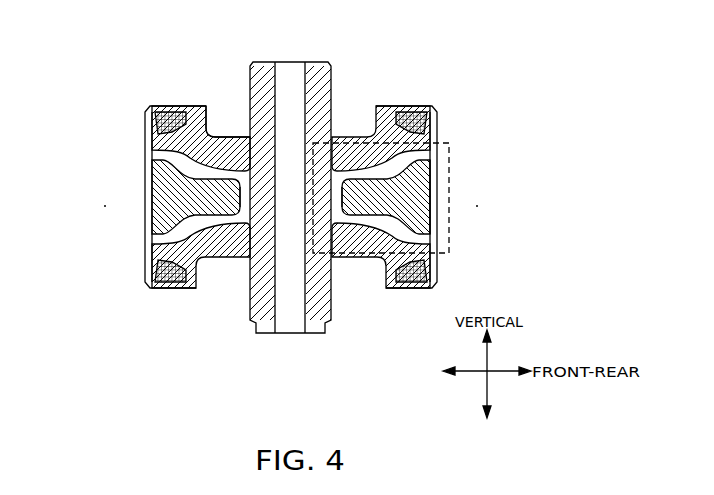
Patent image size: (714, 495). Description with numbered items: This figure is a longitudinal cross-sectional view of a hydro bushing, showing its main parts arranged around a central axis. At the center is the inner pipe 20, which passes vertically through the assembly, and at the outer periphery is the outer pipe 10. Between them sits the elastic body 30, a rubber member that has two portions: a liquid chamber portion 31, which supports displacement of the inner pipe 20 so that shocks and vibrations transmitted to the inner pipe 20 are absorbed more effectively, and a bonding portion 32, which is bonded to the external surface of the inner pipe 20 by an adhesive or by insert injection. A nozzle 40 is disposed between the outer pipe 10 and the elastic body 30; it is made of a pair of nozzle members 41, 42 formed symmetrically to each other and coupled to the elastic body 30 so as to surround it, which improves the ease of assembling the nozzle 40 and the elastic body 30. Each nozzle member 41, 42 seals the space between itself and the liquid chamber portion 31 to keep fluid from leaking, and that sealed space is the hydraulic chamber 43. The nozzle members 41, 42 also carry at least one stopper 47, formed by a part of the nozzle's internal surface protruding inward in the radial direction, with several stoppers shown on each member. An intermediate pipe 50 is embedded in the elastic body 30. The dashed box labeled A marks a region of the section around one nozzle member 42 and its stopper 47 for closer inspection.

The outer pipe 10 is at (437, 117).
The inner pipe 20 is at (316, 74).
The elastic body 30 is at (200, 146).
The liquid chamber portion 31 is at (238, 226).
The bonding portion 32 is at (258, 112).
The nozzle 40 is at (97, 206).
The nozzle member 41 is at (152, 197).
The nozzle member 42 is at (437, 197).
The hydraulic chamber 43 is at (338, 197).
The stopper 47 is at (383, 204).
The intermediate pipe 50 is at (400, 118).
The detail region A is at (452, 150).